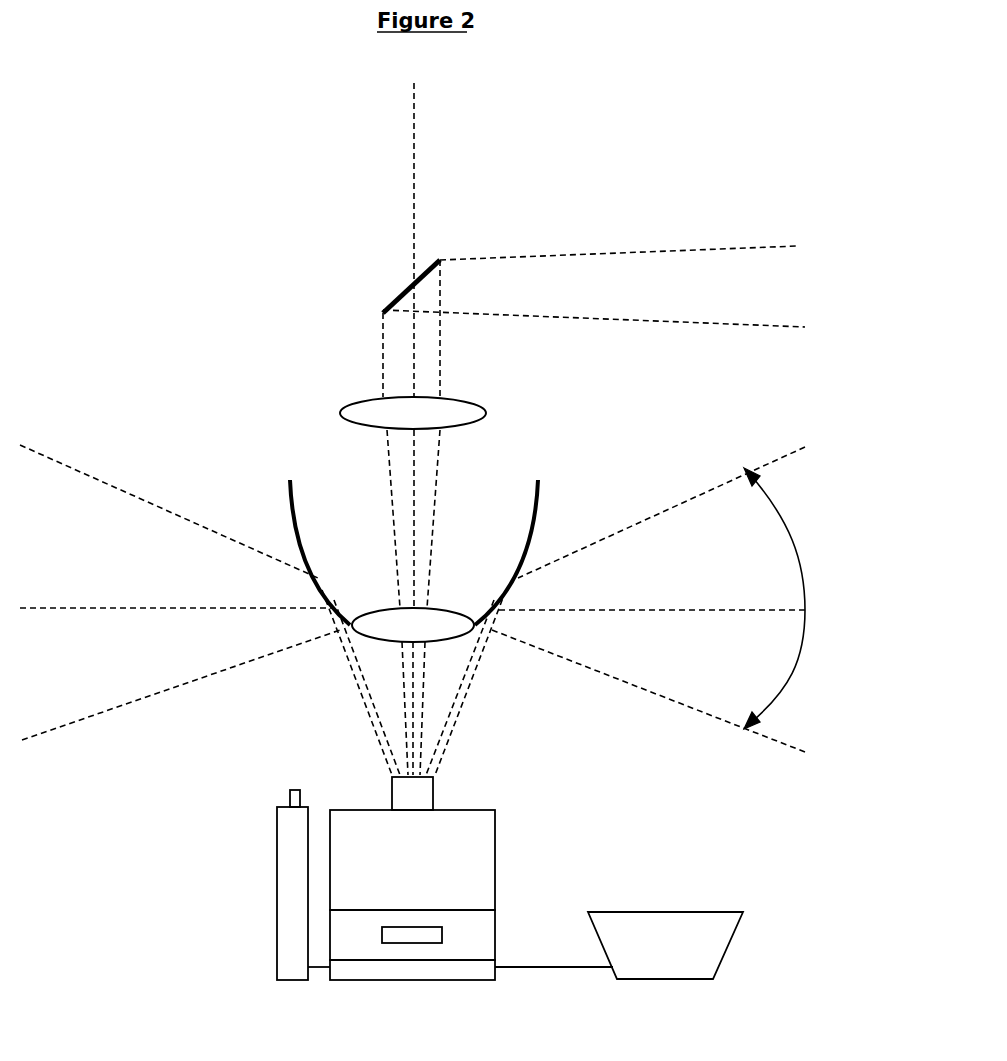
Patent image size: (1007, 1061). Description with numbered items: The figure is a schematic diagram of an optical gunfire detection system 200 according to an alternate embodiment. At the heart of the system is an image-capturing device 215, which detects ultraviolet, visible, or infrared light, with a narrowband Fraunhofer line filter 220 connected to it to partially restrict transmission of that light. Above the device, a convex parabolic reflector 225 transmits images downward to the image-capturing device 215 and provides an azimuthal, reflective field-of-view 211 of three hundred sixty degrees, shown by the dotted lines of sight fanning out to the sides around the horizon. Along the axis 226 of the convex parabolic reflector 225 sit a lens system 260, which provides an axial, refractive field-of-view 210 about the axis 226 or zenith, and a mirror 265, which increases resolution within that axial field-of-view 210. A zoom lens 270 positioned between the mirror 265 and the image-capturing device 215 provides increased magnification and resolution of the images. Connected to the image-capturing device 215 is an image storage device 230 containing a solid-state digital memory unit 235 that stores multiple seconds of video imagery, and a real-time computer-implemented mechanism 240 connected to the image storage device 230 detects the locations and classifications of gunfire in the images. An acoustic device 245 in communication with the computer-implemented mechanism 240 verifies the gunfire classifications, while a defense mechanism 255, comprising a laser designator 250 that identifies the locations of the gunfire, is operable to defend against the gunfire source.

The optical gunfire detection system 200 is at (152, 823).
The axial field-of-view 210 is at (880, 301).
The azimuthal field-of-view 211 is at (108, 560).
The image-capturing device 215 is at (495, 852).
The narrowband Fraunhofer line filter 220 is at (433, 793).
The convex parabolic reflector 225 is at (290, 500).
The axis 226 is at (414, 105).
The image storage device 230 is at (495, 948).
The solid-state digital memory unit 235 is at (442, 937).
The real-time computer-implemented mechanism 240 is at (478, 981).
The acoustic device 245 is at (725, 957).
The laser designator 250 is at (290, 795).
The defense mechanism 255 is at (277, 880).
The lens system 260 is at (487, 405).
The mirror 265 is at (404, 296).
The zoom lens 270 is at (456, 619).